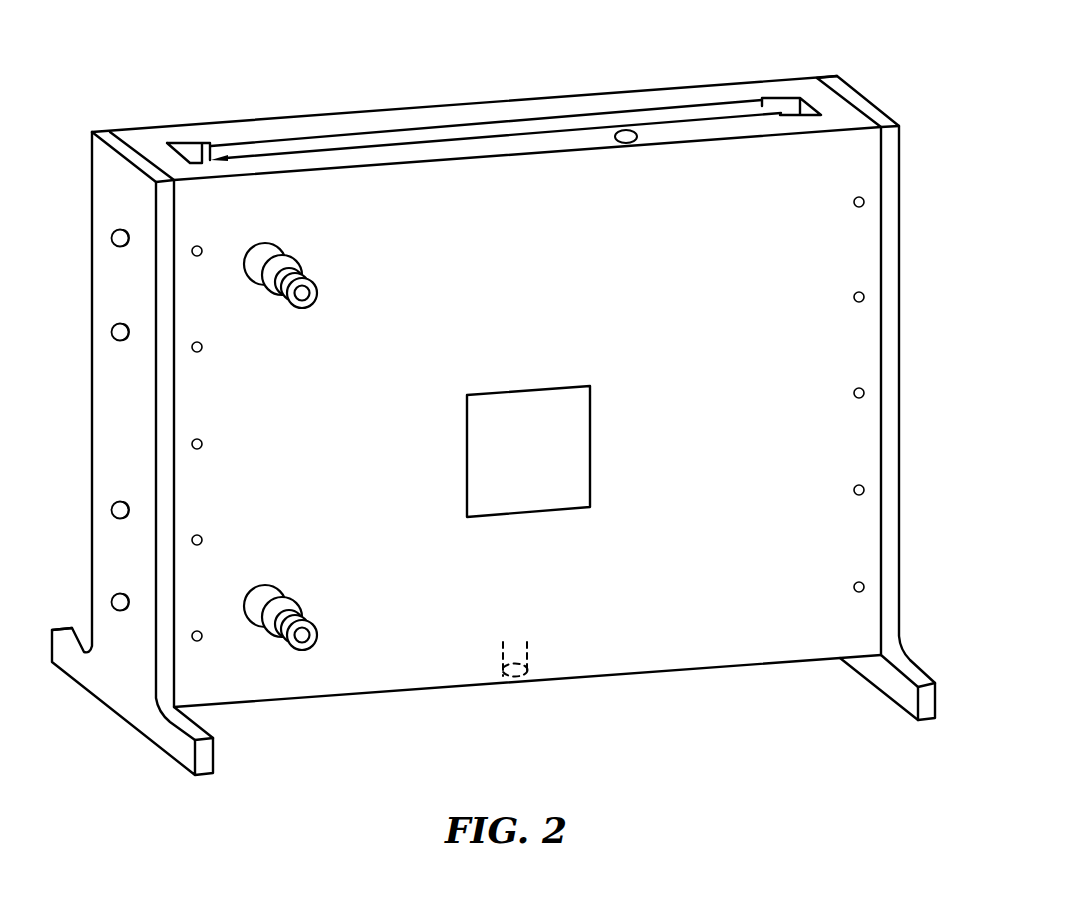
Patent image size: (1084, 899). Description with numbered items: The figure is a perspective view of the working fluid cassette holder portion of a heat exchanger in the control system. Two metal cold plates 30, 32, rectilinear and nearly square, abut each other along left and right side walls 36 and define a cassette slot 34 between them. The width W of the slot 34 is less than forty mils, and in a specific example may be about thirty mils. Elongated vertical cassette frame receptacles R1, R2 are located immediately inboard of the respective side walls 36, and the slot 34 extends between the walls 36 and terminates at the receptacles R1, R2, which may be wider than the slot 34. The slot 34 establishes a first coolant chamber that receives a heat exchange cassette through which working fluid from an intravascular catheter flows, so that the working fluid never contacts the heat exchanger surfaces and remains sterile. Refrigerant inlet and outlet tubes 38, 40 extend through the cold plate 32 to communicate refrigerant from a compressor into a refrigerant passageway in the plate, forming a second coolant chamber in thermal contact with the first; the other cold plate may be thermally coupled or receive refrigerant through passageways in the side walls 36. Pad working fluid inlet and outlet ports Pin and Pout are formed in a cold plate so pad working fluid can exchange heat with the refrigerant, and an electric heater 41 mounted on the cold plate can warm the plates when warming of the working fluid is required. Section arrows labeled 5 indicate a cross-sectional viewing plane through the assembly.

The cold plate 30 is at (512, 112).
The cold plate 32 is at (833, 107).
The cassette slot 34 is at (313, 142).
The side walls 36 is at (158, 158).
The refrigerant inlet tube 38 is at (313, 280).
The refrigerant outlet tube 40 is at (313, 622).
The electric heater 41 is at (528, 387).
The cassette frame receptacle R1 is at (185, 142).
The cassette frame receptacle R2 is at (780, 98).
The slot width W is at (472, 175).
The pad working fluid outlet Pout is at (623, 130).
The pad working fluid inlet Pin is at (515, 683).
The section line 5- 5 is at (156, 176).